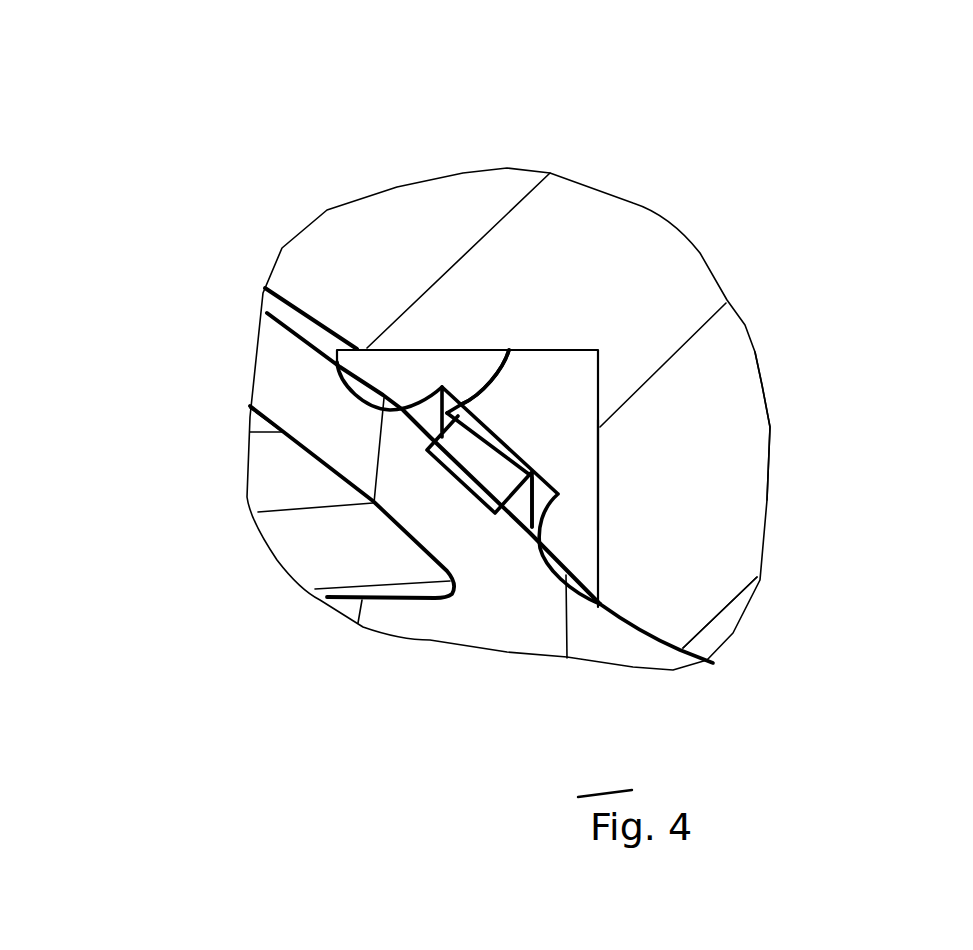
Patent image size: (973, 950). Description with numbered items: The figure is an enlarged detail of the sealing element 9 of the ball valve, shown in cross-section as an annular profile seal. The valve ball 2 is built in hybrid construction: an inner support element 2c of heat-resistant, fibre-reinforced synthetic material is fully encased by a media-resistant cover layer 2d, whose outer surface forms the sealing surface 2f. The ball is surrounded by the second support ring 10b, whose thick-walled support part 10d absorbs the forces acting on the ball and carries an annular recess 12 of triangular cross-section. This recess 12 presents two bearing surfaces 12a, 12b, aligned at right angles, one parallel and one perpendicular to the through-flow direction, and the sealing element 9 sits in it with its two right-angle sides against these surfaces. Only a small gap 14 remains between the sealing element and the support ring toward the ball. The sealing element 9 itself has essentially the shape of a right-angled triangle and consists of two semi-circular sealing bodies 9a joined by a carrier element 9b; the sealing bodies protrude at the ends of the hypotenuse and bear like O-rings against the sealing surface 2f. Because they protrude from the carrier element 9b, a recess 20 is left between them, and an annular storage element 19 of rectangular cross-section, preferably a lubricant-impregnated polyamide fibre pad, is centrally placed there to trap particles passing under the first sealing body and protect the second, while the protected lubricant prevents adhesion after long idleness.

The valve ball 2 is at (170, 360).
The support element 2c is at (300, 541).
The cover layer 2d is at (425, 492).
The sealing surface 2f is at (327, 347).
The sealing element 9 is at (568, 395).
The sealing bodies 9a is at (383, 377).
The carrier element 9b is at (711, 333).
The second support ring 10b is at (723, 415).
The support part 10d is at (677, 542).
The recess 12 is at (562, 348).
The bearing surface 12a is at (463, 350).
The bearing surface 12b is at (599, 474).
The gap 14 is at (280, 305).
The storage element 19 is at (490, 468).
The recess 20 is at (500, 350).